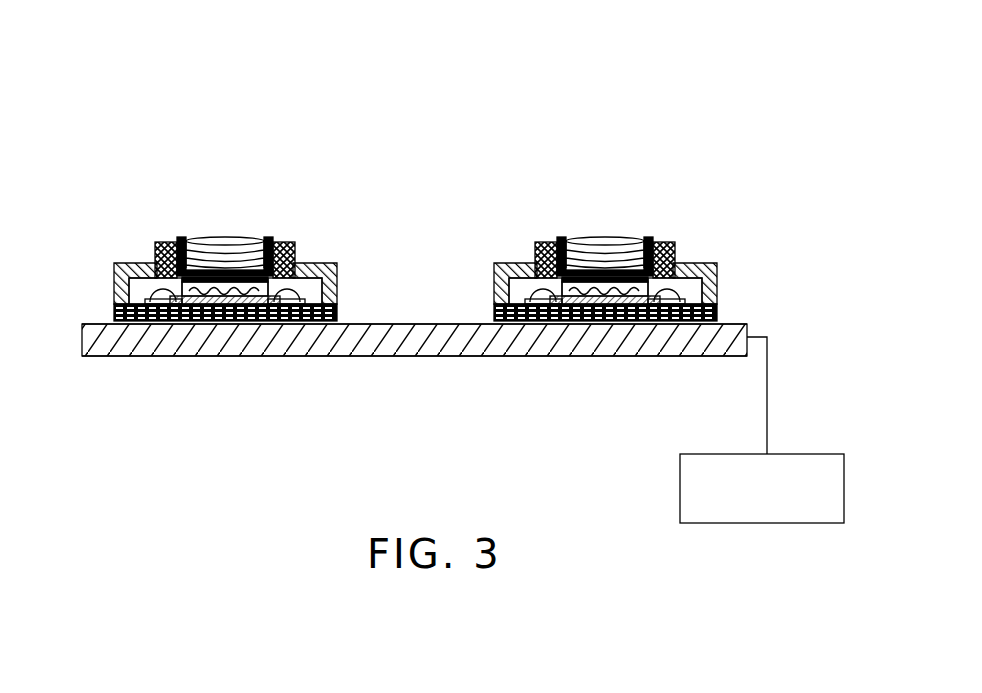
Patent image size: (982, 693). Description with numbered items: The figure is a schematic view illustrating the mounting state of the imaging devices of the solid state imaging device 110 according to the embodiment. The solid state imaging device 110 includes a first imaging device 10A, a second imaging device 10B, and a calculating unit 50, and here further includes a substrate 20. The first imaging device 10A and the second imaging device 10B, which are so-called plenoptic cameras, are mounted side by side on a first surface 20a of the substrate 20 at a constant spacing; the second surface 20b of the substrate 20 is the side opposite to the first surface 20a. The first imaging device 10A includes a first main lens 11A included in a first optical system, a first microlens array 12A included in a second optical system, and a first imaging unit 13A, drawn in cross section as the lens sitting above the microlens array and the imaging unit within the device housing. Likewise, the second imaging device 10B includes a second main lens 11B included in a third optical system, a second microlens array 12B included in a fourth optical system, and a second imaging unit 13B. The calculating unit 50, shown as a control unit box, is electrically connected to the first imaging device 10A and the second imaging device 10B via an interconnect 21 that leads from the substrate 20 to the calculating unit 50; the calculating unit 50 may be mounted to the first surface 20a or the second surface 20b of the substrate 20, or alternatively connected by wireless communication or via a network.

The solid state imaging device 110 is at (453, 305).
The first imaging device 10A is at (199, 271).
The second imaging device 10B is at (611, 276).
The first main lens 11A is at (225, 242).
The second main lens 11B is at (597, 243).
The first microlens array 12A is at (200, 282).
The second microlens array 12B is at (630, 280).
The first imaging unit 13A is at (202, 300).
The second imaging unit 13B is at (598, 300).
The substrate 20 is at (414, 342).
The first surface 20a is at (388, 323).
The second surface 20b is at (390, 357).
The interconnect 21 is at (767, 380).
The calculating unit 50 is at (762, 523).